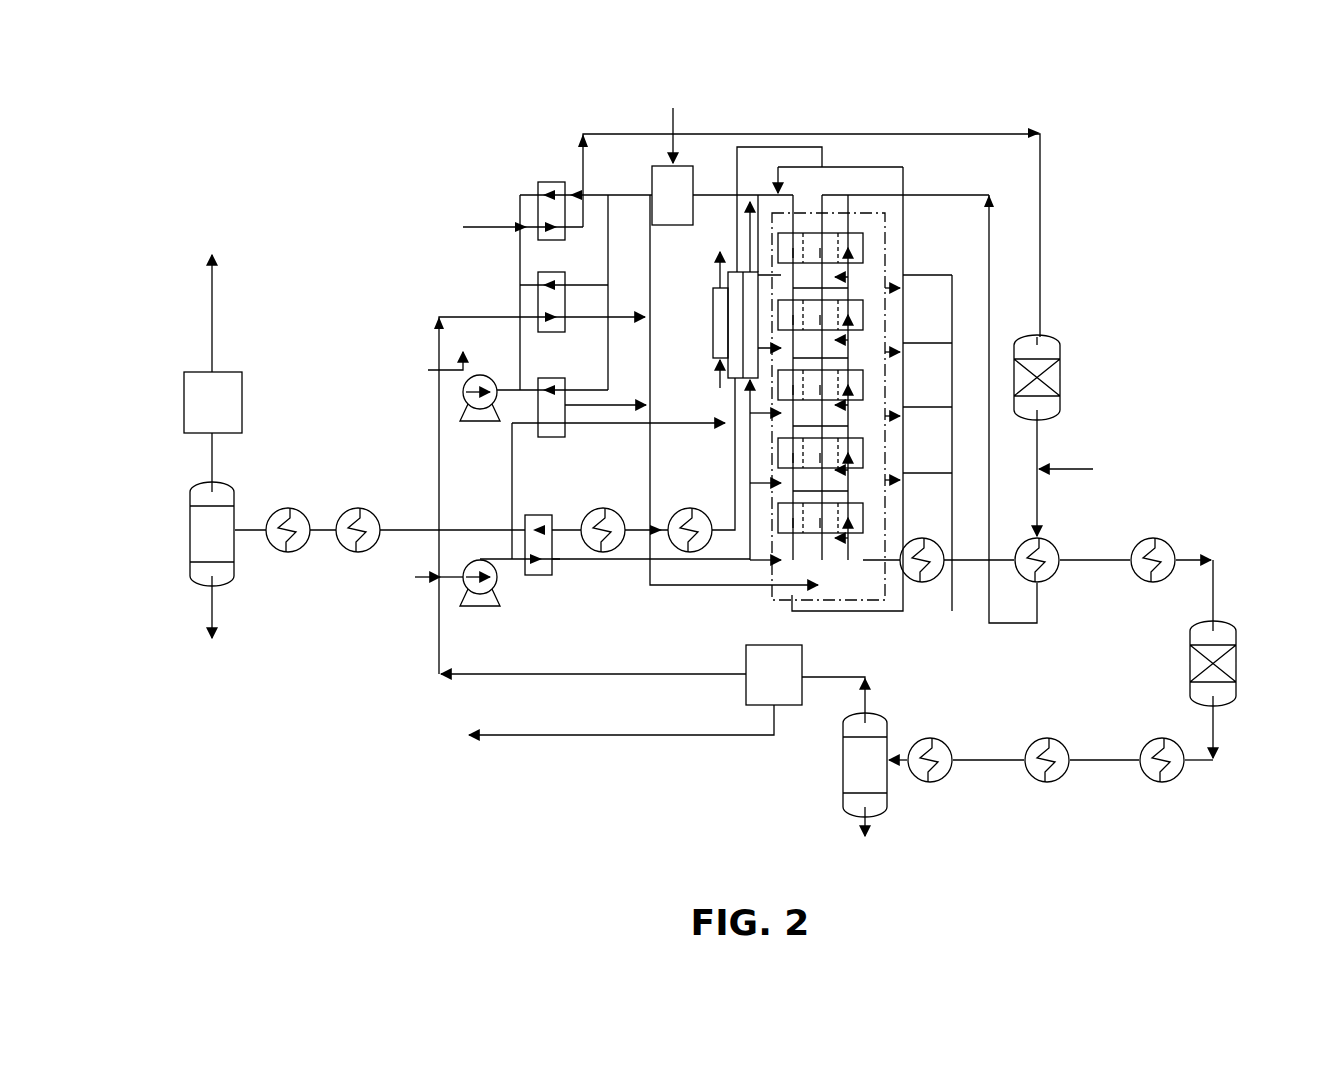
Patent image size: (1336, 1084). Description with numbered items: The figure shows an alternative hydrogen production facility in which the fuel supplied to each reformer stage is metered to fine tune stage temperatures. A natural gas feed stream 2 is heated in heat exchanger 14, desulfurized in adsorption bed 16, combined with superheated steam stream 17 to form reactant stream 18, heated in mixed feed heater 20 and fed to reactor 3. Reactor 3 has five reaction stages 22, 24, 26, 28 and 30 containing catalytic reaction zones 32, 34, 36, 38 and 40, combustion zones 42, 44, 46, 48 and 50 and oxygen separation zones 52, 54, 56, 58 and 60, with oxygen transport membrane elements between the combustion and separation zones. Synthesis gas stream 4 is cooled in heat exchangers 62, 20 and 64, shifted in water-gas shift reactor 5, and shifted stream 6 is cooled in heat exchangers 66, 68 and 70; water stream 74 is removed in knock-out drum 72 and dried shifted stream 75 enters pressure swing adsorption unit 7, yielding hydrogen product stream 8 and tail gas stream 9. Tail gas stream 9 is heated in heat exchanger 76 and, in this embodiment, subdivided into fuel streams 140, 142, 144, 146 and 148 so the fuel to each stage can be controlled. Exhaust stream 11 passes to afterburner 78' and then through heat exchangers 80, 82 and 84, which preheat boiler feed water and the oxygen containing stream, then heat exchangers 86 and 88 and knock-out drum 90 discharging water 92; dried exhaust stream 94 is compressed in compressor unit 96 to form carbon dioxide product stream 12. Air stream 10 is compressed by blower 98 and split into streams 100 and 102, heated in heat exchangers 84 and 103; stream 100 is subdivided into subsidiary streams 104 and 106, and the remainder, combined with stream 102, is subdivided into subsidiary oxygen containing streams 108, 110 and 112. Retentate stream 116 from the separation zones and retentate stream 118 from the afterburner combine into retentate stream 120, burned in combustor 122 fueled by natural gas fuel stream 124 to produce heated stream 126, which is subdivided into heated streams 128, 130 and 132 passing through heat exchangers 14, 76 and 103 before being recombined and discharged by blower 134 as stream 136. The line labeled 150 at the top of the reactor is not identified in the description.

The hydrocarbon containing feed stream 2 is at (508, 235).
The reactor 3 is at (928, 228).
The synthesis gas stream 4 is at (966, 590).
The water-gas shift reactor 5 is at (1238, 665).
The shifted stream 6 is at (1220, 735).
The pressure swing adsorption unit 7 is at (805, 657).
The hydrogen product stream 8 is at (600, 740).
The tail gas stream 9 is at (575, 672).
The air stream 10 is at (440, 580).
The exhaust stream 11 is at (825, 162).
The carbon dioxide product stream 12 is at (215, 318).
The heat exchanger 14 is at (550, 180).
The adsorption bed 16 is at (1055, 365).
The superheated steam stream 17 is at (1080, 468).
The reactant stream 18 is at (1040, 500).
The mixed feed heater 20 is at (1045, 582).
The reaction stage 22 is at (878, 250).
The reaction stage 24 is at (870, 312).
The reaction stage 26 is at (872, 405).
The reaction stage 28 is at (868, 450).
The reaction stage 30 is at (870, 520).
The catalytic reaction zone 32 is at (852, 228).
The catalytic reaction zone 34 is at (893, 290).
The catalytic reaction zone 36 is at (893, 355).
The catalytic reaction zone 38 is at (893, 480).
The catalytic reaction zone 40 is at (852, 530).
The combustion zone 42 is at (825, 228).
The combustion zone 44 is at (858, 340).
The combustion zone 46 is at (820, 317).
The combustion zone 48 is at (770, 425).
The combustion zone 50 is at (826, 538).
The separation zone 52 is at (775, 192).
The separation zone 54 is at (728, 300).
The separation zone 56 is at (718, 378).
The separation zone 58 is at (770, 458).
The separation zone 60 is at (800, 543).
The heat exchanger 62 is at (918, 585).
The heat exchanger 64 is at (1170, 548).
The heat exchanger 66 is at (1150, 785).
The heat exchanger 68 is at (1035, 785).
The heat exchanger 70 is at (918, 785).
The knock-out drum 72 is at (843, 775).
The water stream 74 is at (858, 825).
The dried shifted stream 75 is at (868, 702).
The heat exchanger 76 is at (560, 272).
The afterburner 78' is at (692, 323).
The heat exchanger 80 is at (700, 510).
The heat exchanger 82 is at (606, 508).
The heat exchanger 84 is at (538, 515).
The heat exchanger 86 is at (364, 508).
The heat exchanger 88 is at (294, 508).
The knock-out drum 90 is at (189, 540).
The disengaged water 92 is at (215, 608).
The dried exhaust gas stream 94 is at (210, 460).
The compressor unit 96 is at (184, 405).
The compressor 98 is at (482, 610).
The oxygen containing stream 100 is at (571, 568).
The oxygen containing stream 102 is at (510, 490).
The heat exchanger 103 is at (560, 380).
The first subsidiary stream 104 is at (762, 578).
The second subsidiary stream 106 is at (760, 540).
The third subsidiary oxygen containing stream 108 is at (727, 426).
The fourth subsidiary oxygen containing stream 110 is at (745, 332).
The fifth subsidiary oxygen containing stream 112 is at (740, 268).
The first retentate stream 116 is at (800, 198).
The second retentate stream 118 is at (740, 226).
The combined retentate stream 120 is at (737, 188).
The combustor 122 is at (657, 222).
The natural gas fuel stream 124 is at (668, 118).
The heated stream 126 is at (633, 192).
The subsidiary heated stream 128 is at (588, 192).
The subsidiary heated stream 130 is at (595, 292).
The subsidiary heated stream 132 is at (608, 378).
The blower 134 is at (483, 375).
The discharge stream 136 is at (517, 495).
The fuel stream 140 is at (862, 598).
The fuel stream 142 is at (952, 495).
The fuel stream 144 is at (952, 432).
The fuel stream 146 is at (952, 370).
The fuel stream 148 is at (955, 270).
The top header line 150 is at (905, 168).